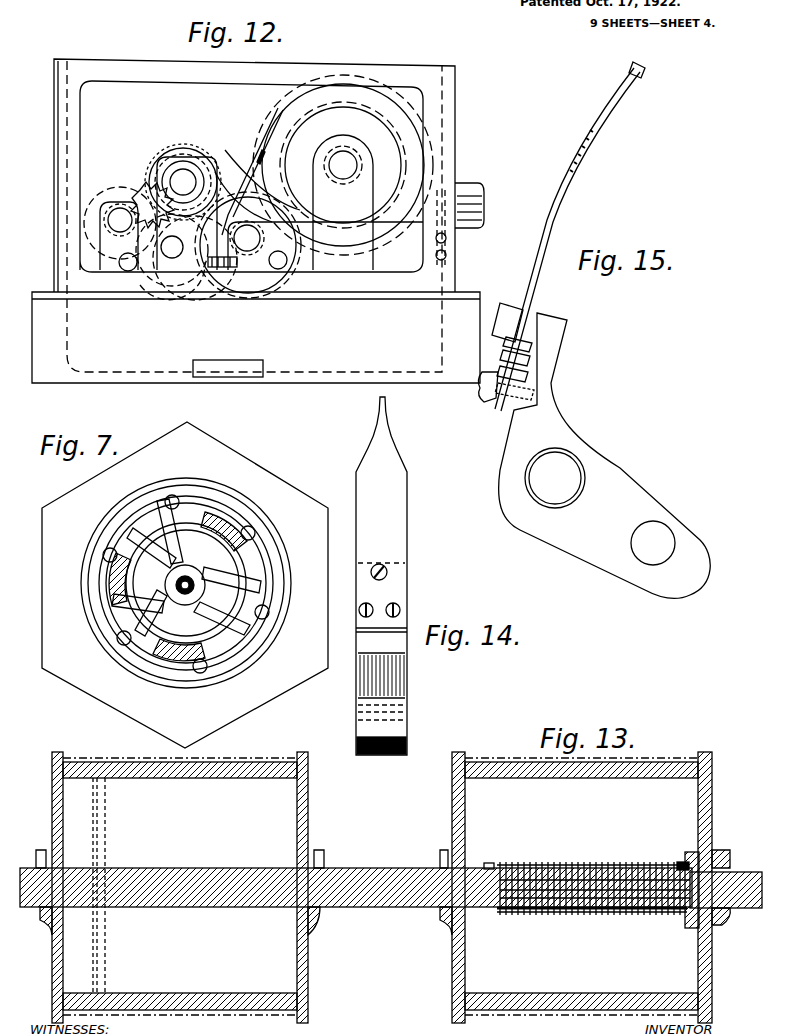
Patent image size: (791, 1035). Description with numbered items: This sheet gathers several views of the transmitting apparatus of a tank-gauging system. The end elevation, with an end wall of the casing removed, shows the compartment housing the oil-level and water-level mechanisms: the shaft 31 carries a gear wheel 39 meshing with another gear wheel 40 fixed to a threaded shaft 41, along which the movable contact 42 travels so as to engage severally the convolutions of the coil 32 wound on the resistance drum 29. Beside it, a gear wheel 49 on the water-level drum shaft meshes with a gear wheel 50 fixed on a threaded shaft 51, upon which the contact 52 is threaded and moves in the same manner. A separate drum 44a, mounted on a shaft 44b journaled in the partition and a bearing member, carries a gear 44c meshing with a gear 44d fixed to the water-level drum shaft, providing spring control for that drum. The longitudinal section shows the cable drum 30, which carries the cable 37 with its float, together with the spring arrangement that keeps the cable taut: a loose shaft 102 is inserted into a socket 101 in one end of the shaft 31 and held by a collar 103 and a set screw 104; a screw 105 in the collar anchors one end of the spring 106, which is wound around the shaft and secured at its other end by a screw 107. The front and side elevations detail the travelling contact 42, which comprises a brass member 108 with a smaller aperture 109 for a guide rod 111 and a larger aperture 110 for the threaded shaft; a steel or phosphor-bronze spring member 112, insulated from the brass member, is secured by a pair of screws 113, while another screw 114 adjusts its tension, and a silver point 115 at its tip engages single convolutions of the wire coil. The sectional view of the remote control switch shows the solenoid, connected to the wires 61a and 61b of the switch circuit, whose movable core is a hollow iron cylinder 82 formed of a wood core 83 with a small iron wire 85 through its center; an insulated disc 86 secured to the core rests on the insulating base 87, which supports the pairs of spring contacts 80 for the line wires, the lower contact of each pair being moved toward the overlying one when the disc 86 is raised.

In FIG. 12, the drum 29 is at (436, 226).
In FIG. 13, the drum 29 is at (665, 758).
In FIG. 13, the drum 30 is at (190, 772).
In FIG. 13, the shaft 31 is at (391, 879).
In FIG. 13, the coil 32 is at (512, 745).
In FIG. 13, the cable 37 is at (112, 970).
In FIG. 12, the gear wheel 39 is at (407, 168).
In FIG. 12, the gear wheel 40 is at (295, 260).
In FIG. 12, the threaded shaft 41 is at (247, 252).
In FIG. 12, the movable contact 42 is at (255, 145).
In FIG. 15, the movable contact 42 is at (538, 243).
In FIG. 12, the separate drum 44a is at (205, 290).
In FIG. 12, the shaft 44b is at (178, 293).
In FIG. 12, the gear 44c is at (110, 252).
In FIG. 12, the gear 44d is at (165, 148).
In FIG. 12, the gear wheel 49 is at (185, 148).
In FIG. 12, the gear wheel 50 is at (120, 194).
In FIG. 12, the threaded shaft 51 is at (172, 258).
In FIG. 12, the contact 52 is at (150, 178).
In FIG. 7, the wire 61a is at (200, 508).
In FIG. 7, the wire 61b is at (195, 673).
In FIG. 7, the contacts 80 is at (165, 530).
In FIG. 7, the hollow iron cylinder 82 is at (190, 575).
In FIG. 7, the wood core 83 is at (186, 598).
In FIG. 7, the iron wire 85 is at (176, 585).
In FIG. 7, the insulated disc 86 is at (255, 595).
In FIG. 7, the base 87 is at (230, 510).
In FIG. 13, the socket 101 is at (655, 880).
In FIG. 13, the loose shaft 102 is at (722, 925).
In FIG. 13, the collar 103 is at (693, 928).
In FIG. 13, the set screw 104 is at (650, 910).
In FIG. 13, the screw 105 is at (683, 860).
In FIG. 13, the spring 106 is at (548, 872).
In FIG. 13, the screw 107 is at (490, 862).
In FIG. 15, the brass member 108 is at (622, 470).
In FIG. 14, the brass member 108 is at (405, 745).
In FIG. 15, the aperture 109 is at (650, 560).
In FIG. 14, the aperture 109 is at (400, 712).
In FIG. 15, the aperture 110 is at (540, 497).
In FIG. 14, the aperture 110 is at (400, 672).
In FIG. 12, the guide rod 111 is at (205, 268).
In FIG. 15, the spring member 112 is at (550, 225).
In FIG. 14, the spring member 112 is at (397, 515).
In FIG. 15, the screws 113 is at (484, 405).
In FIG. 14, the screws 113 is at (373, 608).
In FIG. 15, the screw 114 is at (506, 310).
In FIG. 14, the screw 114 is at (388, 572).
In FIG. 15, the silver point 115 is at (641, 80).